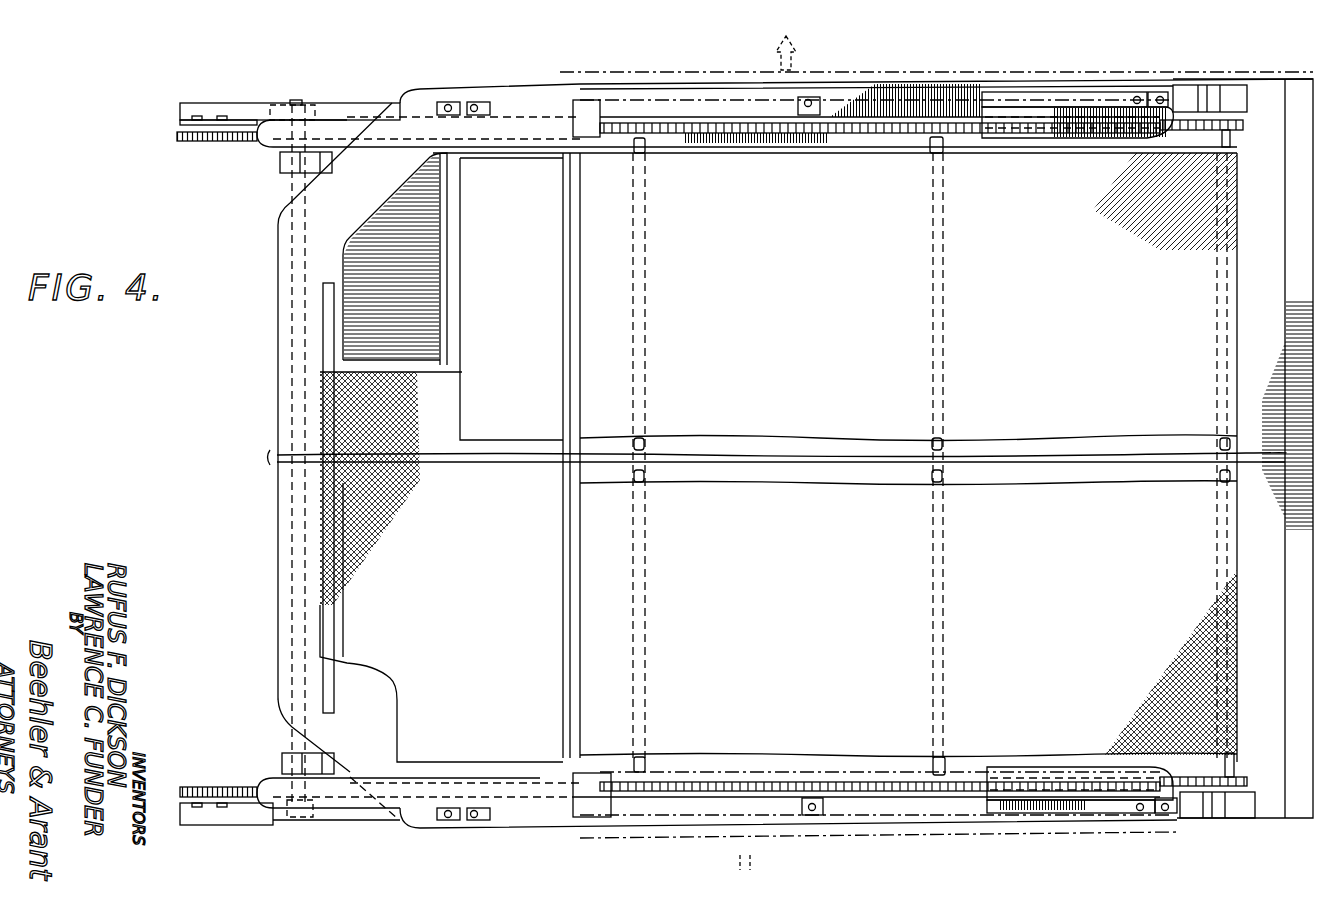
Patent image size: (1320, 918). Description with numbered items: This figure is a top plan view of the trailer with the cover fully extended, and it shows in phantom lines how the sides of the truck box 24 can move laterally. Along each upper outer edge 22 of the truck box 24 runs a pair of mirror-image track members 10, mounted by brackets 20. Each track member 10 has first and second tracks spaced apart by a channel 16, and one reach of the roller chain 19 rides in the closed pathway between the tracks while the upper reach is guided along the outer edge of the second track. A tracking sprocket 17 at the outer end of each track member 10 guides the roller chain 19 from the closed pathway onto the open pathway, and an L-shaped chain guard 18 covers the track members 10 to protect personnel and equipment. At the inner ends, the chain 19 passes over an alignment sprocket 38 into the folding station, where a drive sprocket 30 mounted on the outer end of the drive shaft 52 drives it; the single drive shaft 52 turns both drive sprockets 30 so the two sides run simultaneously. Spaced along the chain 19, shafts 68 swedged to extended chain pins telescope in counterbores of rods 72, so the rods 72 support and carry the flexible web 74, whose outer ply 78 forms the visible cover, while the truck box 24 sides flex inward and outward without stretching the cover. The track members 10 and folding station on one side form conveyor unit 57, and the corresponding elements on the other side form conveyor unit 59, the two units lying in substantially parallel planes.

The track members 10 is at (1048, 105).
The channel 16 is at (885, 108).
The tracking sprocket 17 is at (1233, 135).
The chain guard 18 is at (363, 117).
The roller chain 19 is at (796, 133).
The brackets 20 is at (448, 102).
The upper outer edge 22 is at (640, 103).
The truck box 24 is at (247, 374).
The drive sprocket 30 is at (310, 105).
The alignment sprocket 38 is at (197, 134).
The drive shaft 52 is at (294, 190).
The conveyor unit 57 is at (238, 838).
The conveyor unit 59 is at (169, 85).
The shaft 68 is at (935, 137).
The rod 72 is at (322, 337).
The flexible web 74 is at (312, 406).
The outer ply 78 is at (357, 632).